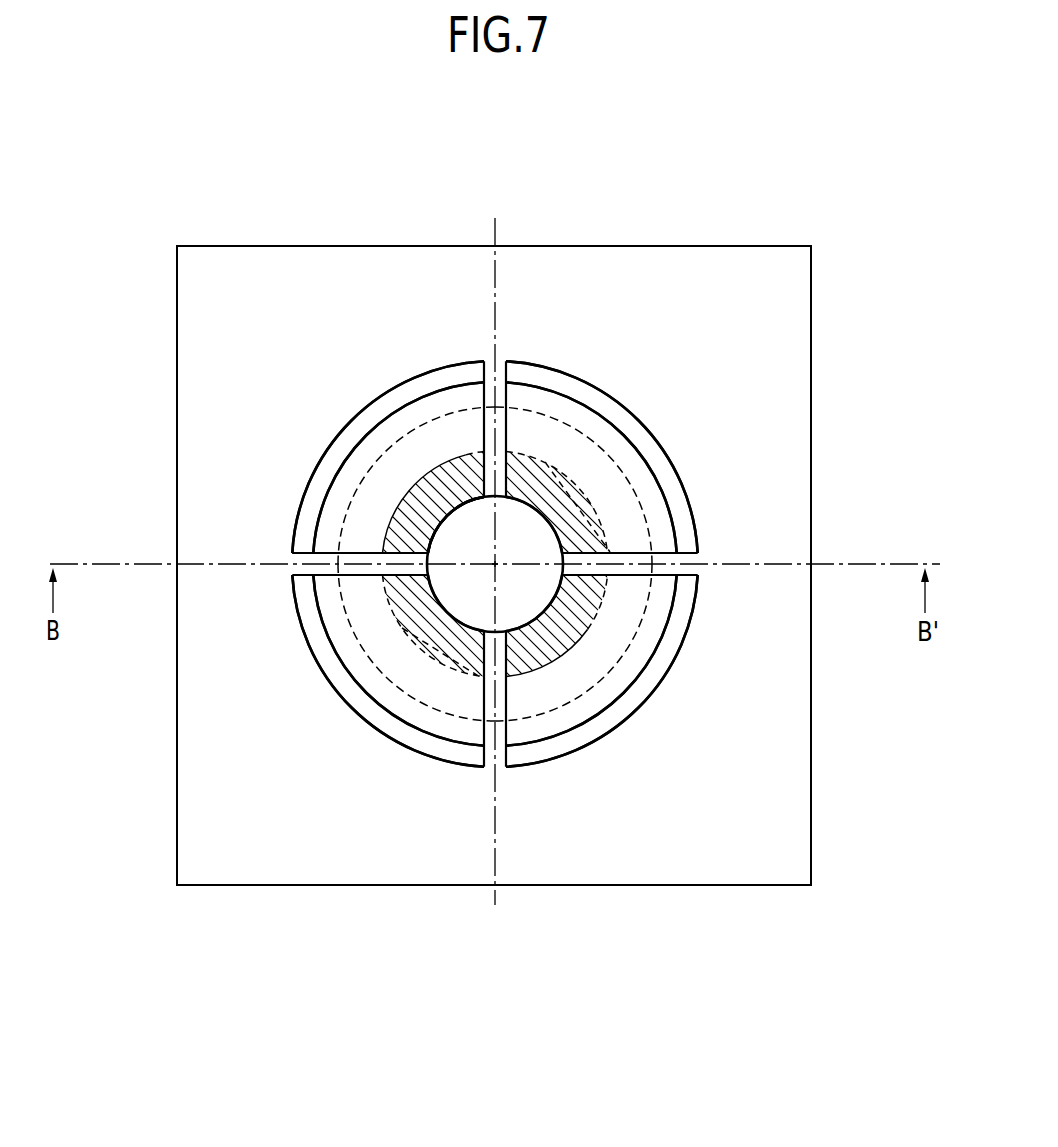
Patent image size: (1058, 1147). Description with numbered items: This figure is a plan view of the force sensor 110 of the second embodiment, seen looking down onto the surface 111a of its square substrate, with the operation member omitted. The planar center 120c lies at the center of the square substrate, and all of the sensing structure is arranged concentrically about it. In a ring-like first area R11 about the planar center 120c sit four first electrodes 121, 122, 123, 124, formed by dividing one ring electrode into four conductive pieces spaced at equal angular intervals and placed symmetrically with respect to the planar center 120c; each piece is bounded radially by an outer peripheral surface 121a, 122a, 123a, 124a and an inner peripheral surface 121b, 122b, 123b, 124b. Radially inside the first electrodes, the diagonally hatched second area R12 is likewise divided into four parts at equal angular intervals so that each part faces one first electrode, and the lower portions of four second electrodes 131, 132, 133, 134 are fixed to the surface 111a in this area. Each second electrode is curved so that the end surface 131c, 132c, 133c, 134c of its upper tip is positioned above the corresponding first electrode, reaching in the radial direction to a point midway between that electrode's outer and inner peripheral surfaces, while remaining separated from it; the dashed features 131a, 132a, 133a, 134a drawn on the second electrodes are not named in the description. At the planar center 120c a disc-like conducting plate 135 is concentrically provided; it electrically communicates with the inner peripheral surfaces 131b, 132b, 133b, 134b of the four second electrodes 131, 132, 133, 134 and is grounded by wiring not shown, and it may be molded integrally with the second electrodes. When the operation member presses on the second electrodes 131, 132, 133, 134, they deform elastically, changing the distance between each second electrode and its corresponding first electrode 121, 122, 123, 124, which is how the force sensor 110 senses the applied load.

The force sensor 110 is at (835, 222).
The surface of the substrate 111a is at (800, 323).
The planar center 120c is at (495, 564).
The first electrode 121 is at (303, 486).
The outer peripheral surface 121a is at (318, 519).
The inner peripheral surface 121b is at (340, 543).
The first electrode 122 is at (688, 485).
The outer peripheral surface 122a is at (672, 519).
The inner peripheral surface 122b is at (650, 543).
The first electrode 123 is at (702, 587).
The outer peripheral surface 123a is at (672, 609).
The inner peripheral surface 123b is at (644, 620).
The first electrode 124 is at (288, 587).
The outer peripheral surface 124a is at (318, 609).
The inner peripheral surface 124b is at (346, 620).
The second electrode 131 is at (458, 388).
The boundary portion 131a is at (452, 457).
The inner peripheral surface 131b is at (443, 512).
The end surface 131c is at (363, 438).
The second electrode 132 is at (532, 388).
The boundary portion 132a is at (537, 455).
The inner peripheral surface 132b is at (545, 513).
The end surface 132c is at (625, 437).
The second electrode 133 is at (595, 718).
The boundary portion 133a is at (590, 628).
The inner peripheral surface 133b is at (547, 616).
The end surface 133c is at (562, 638).
The second electrode 134 is at (445, 743).
The boundary portion 134a is at (400, 628).
The inner peripheral surface 134b is at (443, 614).
The end surface 134c is at (455, 650).
The conducting plate 135 is at (516, 610).
The first area R11 is at (488, 745).
The second area R12 is at (418, 492).